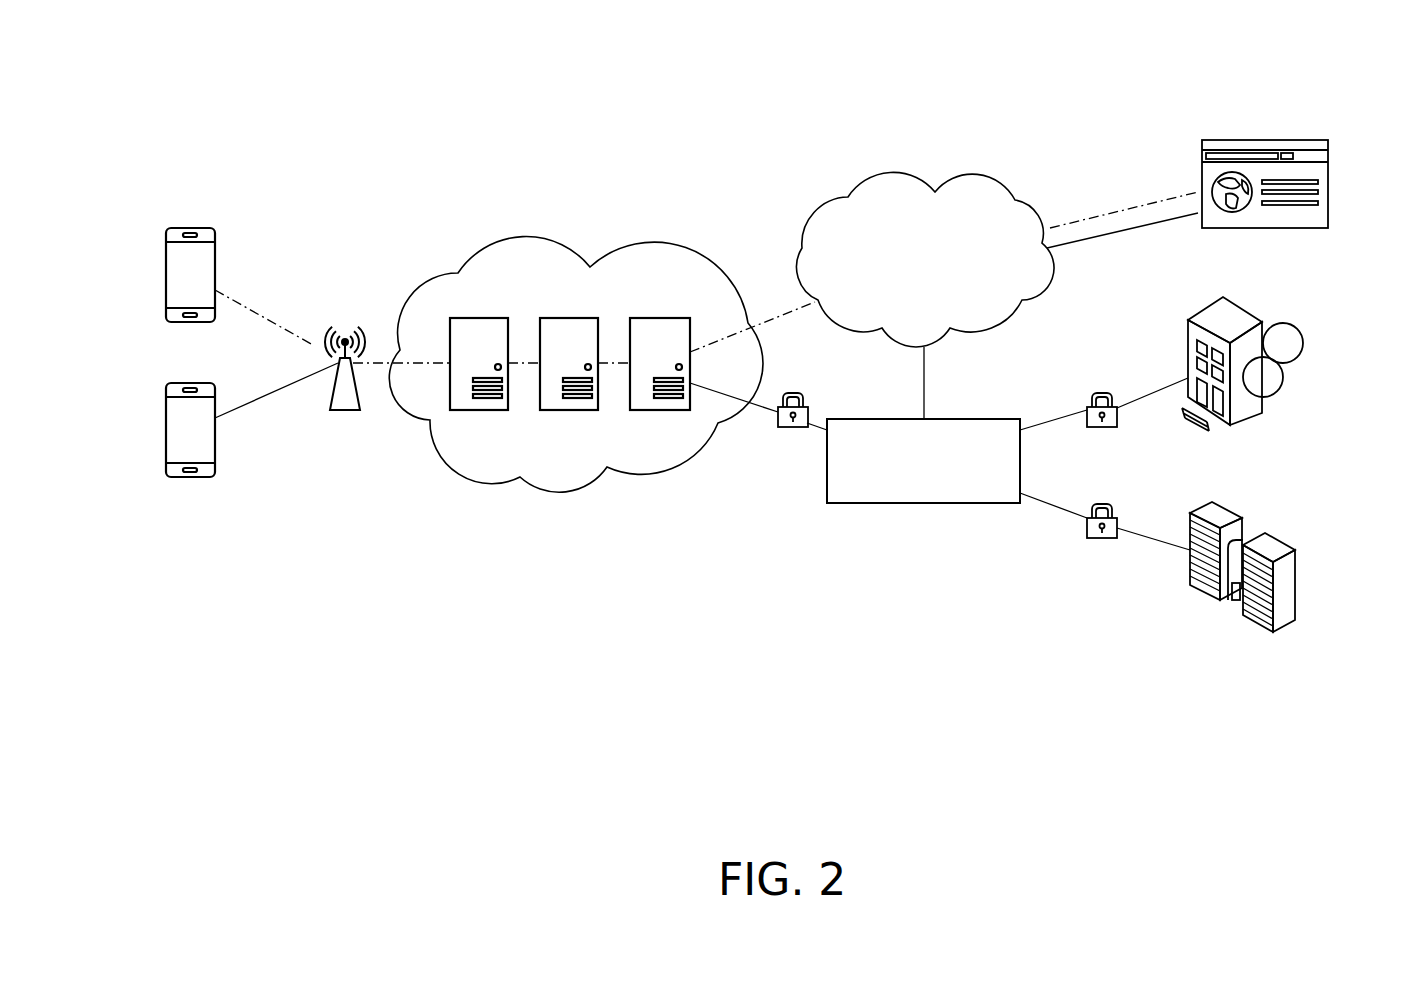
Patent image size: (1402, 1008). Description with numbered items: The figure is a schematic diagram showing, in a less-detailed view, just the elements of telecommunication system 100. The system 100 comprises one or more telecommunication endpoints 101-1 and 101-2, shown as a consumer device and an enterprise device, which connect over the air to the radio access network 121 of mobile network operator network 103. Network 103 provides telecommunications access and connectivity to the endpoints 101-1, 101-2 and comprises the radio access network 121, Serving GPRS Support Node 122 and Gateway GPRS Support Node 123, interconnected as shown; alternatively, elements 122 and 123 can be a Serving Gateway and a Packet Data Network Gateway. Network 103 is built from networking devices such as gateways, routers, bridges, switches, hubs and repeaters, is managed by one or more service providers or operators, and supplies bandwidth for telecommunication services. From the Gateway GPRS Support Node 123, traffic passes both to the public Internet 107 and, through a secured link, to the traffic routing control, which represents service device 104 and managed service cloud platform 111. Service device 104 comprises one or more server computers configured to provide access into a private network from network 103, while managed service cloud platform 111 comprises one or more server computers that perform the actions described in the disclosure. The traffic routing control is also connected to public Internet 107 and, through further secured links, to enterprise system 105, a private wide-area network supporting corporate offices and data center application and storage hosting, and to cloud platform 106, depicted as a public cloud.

The telecommunication system 100 is at (277, 48).
The telecommunication endpoint 101-1 is at (215, 250).
The telecommunication endpoint 101-2 is at (215, 438).
The radio access network 121 is at (345, 410).
The mobile network operator network 103 is at (558, 348).
The Serving GPRS Support Node 122 is at (570, 318).
The Gateway GPRS Support Node 123 is at (660, 318).
The public Internet 107 is at (880, 170).
The service device 104 is at (906, 496).
The managed service cloud platform 111 is at (923, 503).
The enterprise system 105 is at (1245, 320).
The cloud platform 106 is at (1273, 542).